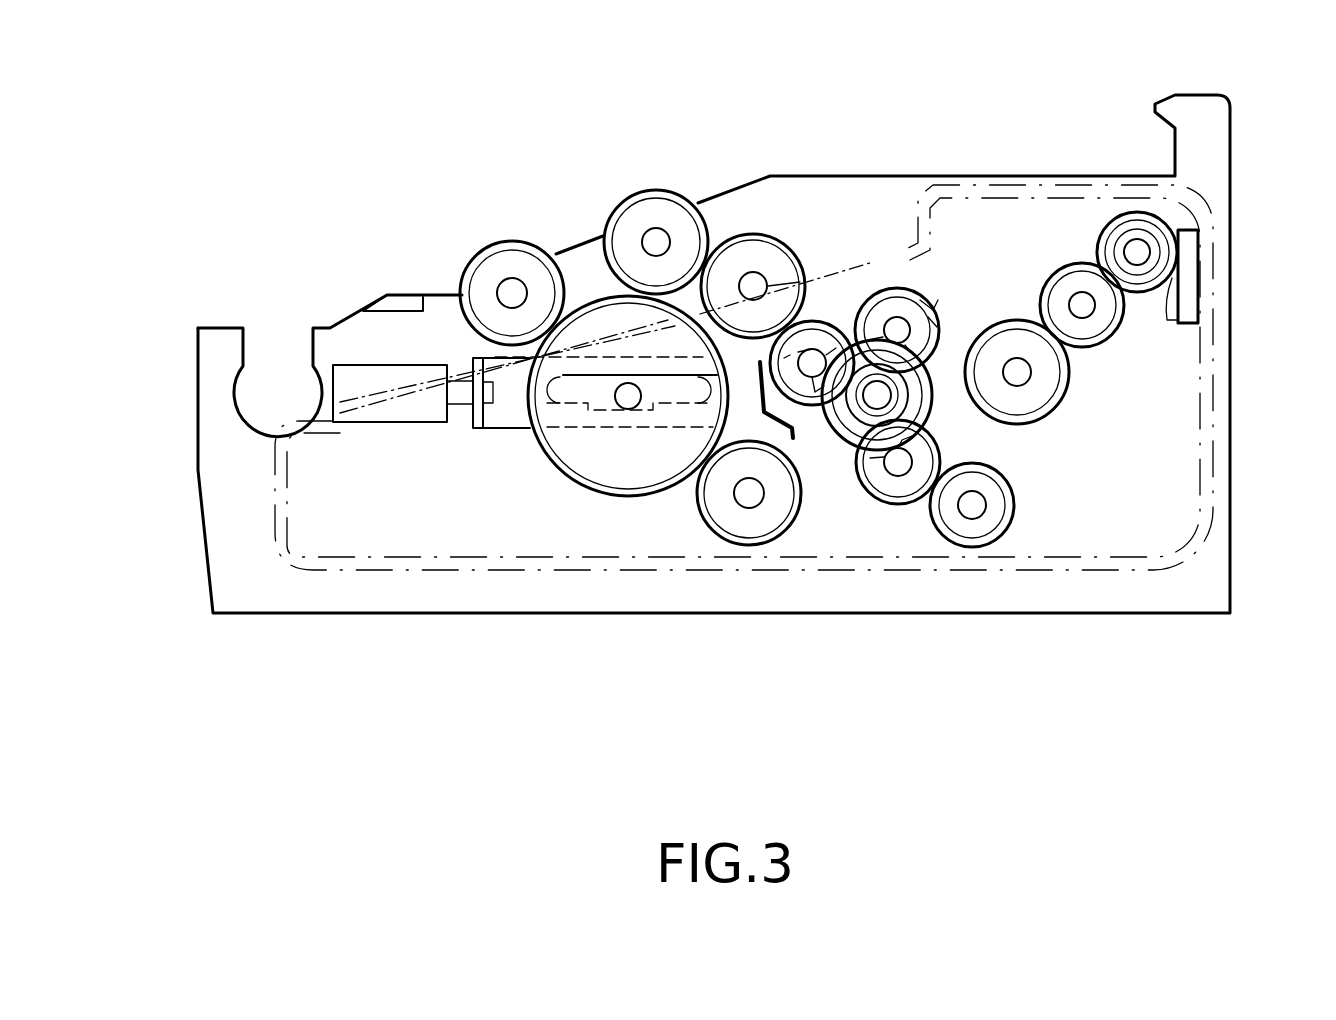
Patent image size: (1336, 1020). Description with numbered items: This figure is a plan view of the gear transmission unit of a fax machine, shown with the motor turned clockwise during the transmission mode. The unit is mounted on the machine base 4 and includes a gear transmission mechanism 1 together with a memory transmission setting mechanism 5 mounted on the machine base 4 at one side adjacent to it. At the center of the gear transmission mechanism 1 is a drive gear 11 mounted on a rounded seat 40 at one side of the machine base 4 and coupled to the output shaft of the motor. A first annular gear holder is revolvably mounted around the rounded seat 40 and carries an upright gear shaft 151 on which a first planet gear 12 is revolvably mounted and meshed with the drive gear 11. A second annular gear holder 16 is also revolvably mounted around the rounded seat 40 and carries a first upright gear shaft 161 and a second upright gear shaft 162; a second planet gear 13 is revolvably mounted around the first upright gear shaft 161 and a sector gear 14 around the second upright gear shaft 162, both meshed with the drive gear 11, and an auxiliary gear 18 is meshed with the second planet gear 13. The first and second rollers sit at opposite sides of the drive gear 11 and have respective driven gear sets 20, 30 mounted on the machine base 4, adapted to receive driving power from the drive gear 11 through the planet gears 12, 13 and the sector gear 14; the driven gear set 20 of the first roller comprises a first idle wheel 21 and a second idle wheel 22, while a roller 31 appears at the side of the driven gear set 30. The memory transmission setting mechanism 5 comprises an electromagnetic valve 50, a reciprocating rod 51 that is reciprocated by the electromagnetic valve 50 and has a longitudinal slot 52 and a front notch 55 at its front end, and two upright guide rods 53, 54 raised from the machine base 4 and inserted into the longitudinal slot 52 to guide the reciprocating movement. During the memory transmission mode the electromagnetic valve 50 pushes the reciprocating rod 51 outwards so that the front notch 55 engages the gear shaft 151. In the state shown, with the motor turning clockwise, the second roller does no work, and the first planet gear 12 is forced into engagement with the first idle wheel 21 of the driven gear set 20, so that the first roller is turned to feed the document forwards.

The gear transmission mechanism 1 is at (857, 517).
The machine base 4 is at (227, 602).
The memory transmission setting mechanism 5 is at (409, 437).
The drive gear 11 is at (852, 432).
The first planet gear 12 is at (822, 332).
The second planet gear 13 is at (893, 500).
The sector gear 14 is at (933, 310).
The second annular gear holder 16 is at (918, 407).
The auxiliary gear 18 is at (997, 537).
The driven gear set 20 is at (587, 287).
The first idle wheel 21 is at (760, 362).
The second idle wheel 22 is at (744, 540).
The driven gear set 30 is at (1072, 243).
The fixing roller 31 is at (1053, 377).
The rounded seat 40 is at (912, 397).
The electromagnetic valve 50 is at (385, 422).
The reciprocating rod 51 is at (505, 410).
The longitudinal slot 52 is at (603, 383).
The upright guide rod 53 is at (552, 400).
The upright guide rod 54 is at (694, 400).
The front notch 55 is at (742, 250).
The upright gear shaft 151 is at (813, 355).
The first upright gear shaft 161 is at (898, 462).
The second upright gear shaft 162 is at (898, 330).